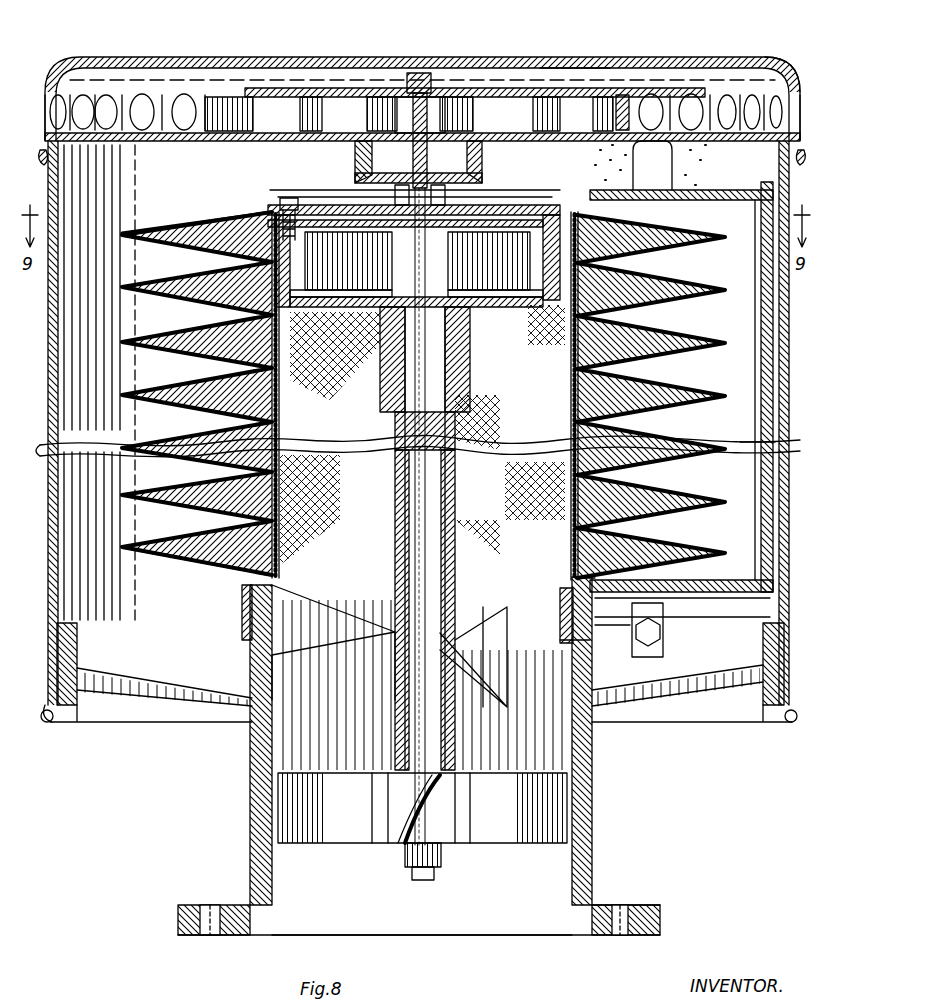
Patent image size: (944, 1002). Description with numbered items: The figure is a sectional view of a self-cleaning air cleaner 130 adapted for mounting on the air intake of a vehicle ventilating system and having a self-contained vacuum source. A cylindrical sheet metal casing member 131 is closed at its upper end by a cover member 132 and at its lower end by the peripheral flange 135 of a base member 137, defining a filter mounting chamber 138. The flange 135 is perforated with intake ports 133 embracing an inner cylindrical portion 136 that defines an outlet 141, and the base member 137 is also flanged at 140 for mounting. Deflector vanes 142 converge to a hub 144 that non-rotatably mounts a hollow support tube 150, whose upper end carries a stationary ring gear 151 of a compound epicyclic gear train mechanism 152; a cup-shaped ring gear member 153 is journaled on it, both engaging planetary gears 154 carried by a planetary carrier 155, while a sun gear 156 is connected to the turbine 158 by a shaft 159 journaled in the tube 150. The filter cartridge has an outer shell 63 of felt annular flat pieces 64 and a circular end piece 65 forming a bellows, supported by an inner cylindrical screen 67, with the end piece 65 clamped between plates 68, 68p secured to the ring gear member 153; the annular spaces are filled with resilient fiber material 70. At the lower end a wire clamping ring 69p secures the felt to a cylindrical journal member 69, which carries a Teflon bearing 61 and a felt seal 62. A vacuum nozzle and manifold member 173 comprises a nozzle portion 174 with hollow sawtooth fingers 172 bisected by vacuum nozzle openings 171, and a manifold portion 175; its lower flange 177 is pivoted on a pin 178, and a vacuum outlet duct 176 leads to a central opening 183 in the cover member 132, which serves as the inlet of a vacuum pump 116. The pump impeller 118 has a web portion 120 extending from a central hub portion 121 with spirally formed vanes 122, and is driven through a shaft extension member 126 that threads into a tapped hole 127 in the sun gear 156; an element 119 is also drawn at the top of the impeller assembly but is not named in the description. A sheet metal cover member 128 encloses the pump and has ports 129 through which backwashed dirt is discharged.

The self-cleaning air cleaner 130 is at (118, 48).
The ports 129 is at (45, 95).
The cover member 132 is at (245, 141).
The impeller 118 is at (492, 88).
The web portion 120 is at (358, 97).
The shaft bolt 119 is at (425, 75).
The vacuum pump 116 is at (577, 66).
The spirally formed vanes 122 is at (622, 95).
The sheet metal cover member 128 is at (765, 60).
The vacuum outlet duct 176 is at (648, 141).
The central opening 183 is at (279, 114).
The central hub portion 121 is at (470, 131).
The shaft extension member 126 is at (418, 162).
The tapped hole 127 is at (461, 162).
The cup-shaped ring gear member 153 is at (330, 197).
The sun gear 156 is at (395, 195).
The plate 68p is at (292, 198).
The plate 68 is at (268, 207).
The circular end piece 65 is at (213, 220).
The annular flat pieces 64 is at (188, 330).
The outer shell 63 is at (192, 563).
The resilient latex-impregnated fiber material 70 is at (268, 395).
The sawtooth fingers 172 is at (712, 250).
The vacuum nozzle openings 171 is at (650, 205).
The nozzle portion 174 is at (700, 592).
The manifold portion 175 is at (775, 325).
The vacuum nozzle and manifold member 173 is at (778, 442).
The filter mounting chamber 138 is at (62, 505).
The cylindrical sheet metal casing member 131 is at (45, 444).
The inner cylindrical screen 67 is at (276, 540).
The compound epicyclic gear train mechanism 152 is at (362, 300).
The stationary ring gear 151 is at (470, 300).
The planetary carrier 155 is at (327, 297).
The planetary gears 154 is at (500, 297).
The hub 144 is at (458, 498).
The hollow support tube 150 is at (398, 448).
The base member 137 is at (252, 757).
The inner cylindrical portion 136 is at (593, 832).
The deflector vanes 142 is at (368, 632).
The shaft 159 is at (438, 456).
The turbine 158 is at (482, 835).
The outlet 141 is at (552, 930).
The flange 140 is at (655, 915).
The peripheral flange 135 is at (57, 678).
The intake ports 133 is at (190, 700).
The pin 178 is at (566, 605).
The Teflon bearing 61 is at (570, 578).
The felt seal 62 is at (570, 630).
The cylindrical journal member 69 is at (632, 628).
The flange 177 is at (680, 617).
The wire clamping ring 69p is at (244, 592).